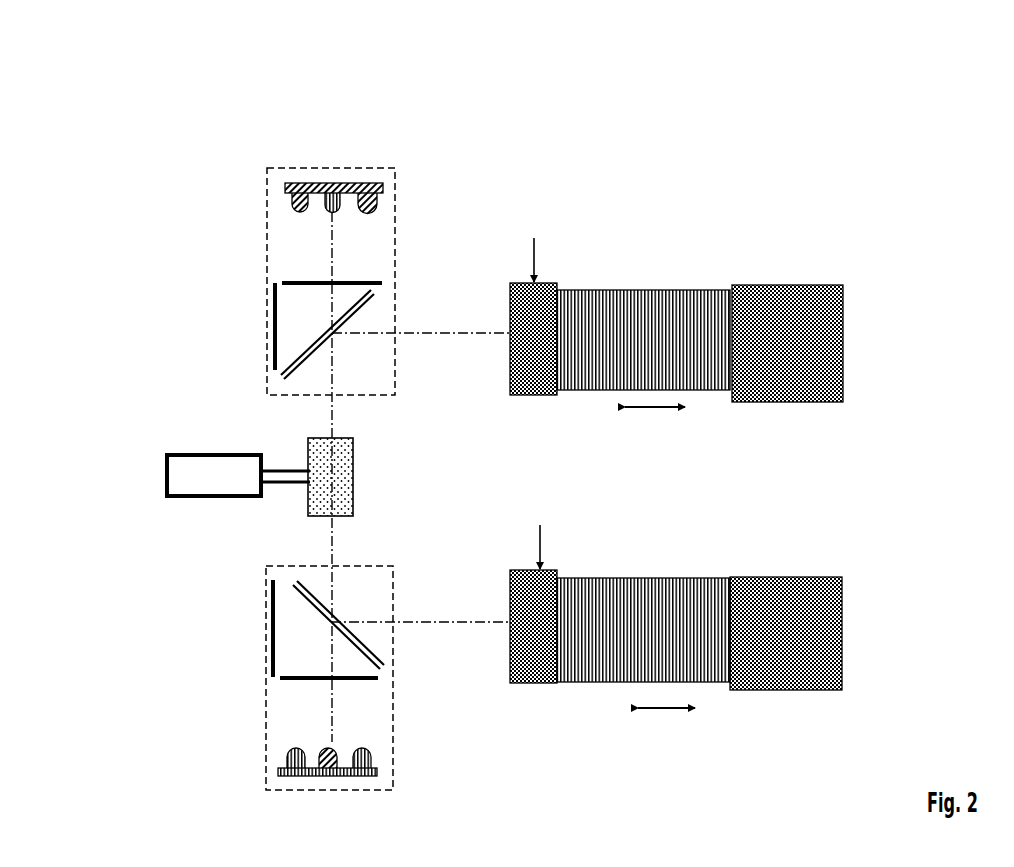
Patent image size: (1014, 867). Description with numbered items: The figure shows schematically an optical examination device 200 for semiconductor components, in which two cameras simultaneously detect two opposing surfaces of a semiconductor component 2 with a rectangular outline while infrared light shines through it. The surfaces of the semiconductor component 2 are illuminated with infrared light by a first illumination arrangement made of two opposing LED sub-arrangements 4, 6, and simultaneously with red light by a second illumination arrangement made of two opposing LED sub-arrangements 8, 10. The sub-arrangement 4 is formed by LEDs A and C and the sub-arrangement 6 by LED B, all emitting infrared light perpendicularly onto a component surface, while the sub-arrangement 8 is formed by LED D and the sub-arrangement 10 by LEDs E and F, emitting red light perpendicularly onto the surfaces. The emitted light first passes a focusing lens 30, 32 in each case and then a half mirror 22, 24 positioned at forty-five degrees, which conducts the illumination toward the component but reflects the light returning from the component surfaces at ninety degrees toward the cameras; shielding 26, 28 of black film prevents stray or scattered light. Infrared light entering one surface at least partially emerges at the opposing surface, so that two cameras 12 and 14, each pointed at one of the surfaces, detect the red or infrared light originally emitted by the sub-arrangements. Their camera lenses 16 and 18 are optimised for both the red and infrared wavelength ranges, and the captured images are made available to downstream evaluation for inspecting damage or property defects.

The optical examination device 200 is at (296, 84).
The semiconductor component 2 is at (338, 481).
The sub-arrangement of the first illumination arrangement 4 is at (301, 264).
The sub-arrangement of the second illumination arrangement 8 is at (295, 174).
The sub-arrangement of the first illumination arrangement 6 is at (290, 693).
The sub-arrangement of the second illumination arrangement 10 is at (282, 784).
The camera 12 is at (772, 652).
The camera 14 is at (773, 360).
The camera lens 16 is at (602, 587).
The camera lens 18 is at (597, 299).
The half mirror 22 is at (327, 334).
The half mirror 24 is at (332, 625).
The shielding 26 is at (251, 326).
The shielding 28 is at (246, 628).
The focusing lens 30 is at (332, 262).
The focusing lens 32 is at (327, 694).